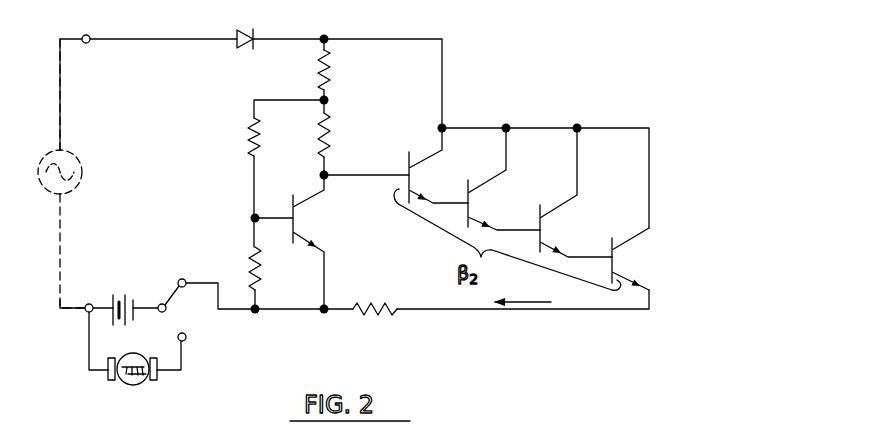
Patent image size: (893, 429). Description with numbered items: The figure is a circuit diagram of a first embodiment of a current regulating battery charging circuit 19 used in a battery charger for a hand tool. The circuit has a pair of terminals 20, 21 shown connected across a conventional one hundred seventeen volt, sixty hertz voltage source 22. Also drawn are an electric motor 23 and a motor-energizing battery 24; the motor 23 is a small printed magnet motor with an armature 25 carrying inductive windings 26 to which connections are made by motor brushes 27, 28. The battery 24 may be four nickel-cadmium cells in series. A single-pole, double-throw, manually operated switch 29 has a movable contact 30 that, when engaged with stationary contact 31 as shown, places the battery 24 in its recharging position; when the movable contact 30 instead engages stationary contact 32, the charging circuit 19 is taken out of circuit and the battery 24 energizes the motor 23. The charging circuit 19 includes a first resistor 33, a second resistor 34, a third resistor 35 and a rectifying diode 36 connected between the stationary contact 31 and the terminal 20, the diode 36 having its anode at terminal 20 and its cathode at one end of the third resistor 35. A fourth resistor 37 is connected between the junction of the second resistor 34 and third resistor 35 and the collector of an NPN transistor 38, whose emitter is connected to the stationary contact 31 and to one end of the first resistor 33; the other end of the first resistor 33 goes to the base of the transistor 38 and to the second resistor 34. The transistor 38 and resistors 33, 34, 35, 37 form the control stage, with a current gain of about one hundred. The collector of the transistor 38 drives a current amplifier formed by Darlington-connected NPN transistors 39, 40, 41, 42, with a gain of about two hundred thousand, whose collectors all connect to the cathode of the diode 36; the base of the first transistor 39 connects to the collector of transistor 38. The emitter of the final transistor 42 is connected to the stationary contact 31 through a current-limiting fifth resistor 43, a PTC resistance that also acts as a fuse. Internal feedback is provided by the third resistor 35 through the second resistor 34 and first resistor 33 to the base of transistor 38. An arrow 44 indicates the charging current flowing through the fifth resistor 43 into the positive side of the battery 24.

The battery charging circuit 19 is at (455, 118).
The terminal 20 is at (88, 34).
The terminal 21 is at (88, 303).
The voltage source 22 is at (82, 178).
The electric motor 23 is at (122, 390).
The battery 24 is at (112, 298).
The armature 25 is at (128, 380).
The inductive windings 26 is at (136, 380).
The motor brush 27 is at (108, 372).
The motor brush 28 is at (157, 374).
The manually operated switch 29 is at (192, 304).
The movable contact 30 is at (177, 283).
The stationary contact 31 is at (186, 279).
The stationary contact 32 is at (186, 337).
The first resistor 33 is at (262, 266).
The second resistor 34 is at (258, 130).
The third resistor 35 is at (332, 68).
The rectifying diode 36 is at (262, 32).
The fourth resistor 37 is at (333, 139).
The NPN transistor 38 is at (330, 240).
The NPN junction transistor 39 is at (414, 178).
The NPN junction transistor 40 is at (473, 204).
The NPN junction transistor 41 is at (544, 232).
The NPN junction transistor 42 is at (616, 262).
The fifth resistor 43 is at (362, 300).
The arrow 44 is at (542, 300).